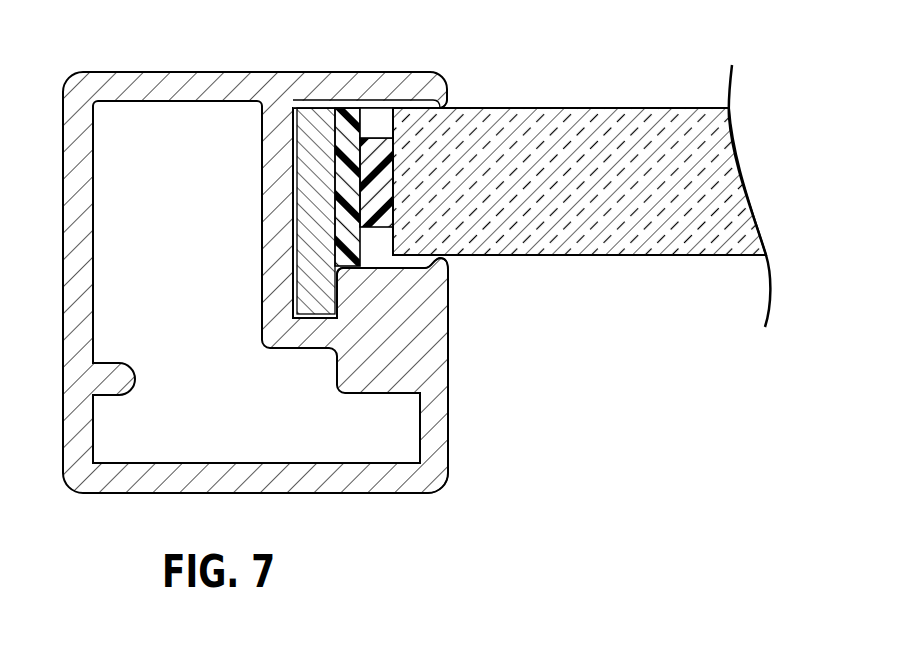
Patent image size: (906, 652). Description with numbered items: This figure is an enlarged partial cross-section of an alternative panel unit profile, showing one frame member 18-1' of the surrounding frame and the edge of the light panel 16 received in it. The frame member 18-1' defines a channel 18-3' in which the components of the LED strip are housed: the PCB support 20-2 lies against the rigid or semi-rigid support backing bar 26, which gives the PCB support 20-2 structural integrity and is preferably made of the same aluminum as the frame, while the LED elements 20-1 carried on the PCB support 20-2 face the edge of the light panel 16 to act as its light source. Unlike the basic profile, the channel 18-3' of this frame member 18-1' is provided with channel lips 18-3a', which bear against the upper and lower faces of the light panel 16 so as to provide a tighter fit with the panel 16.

The frame member 18-1' is at (255, 250).
The channel 18-3' is at (424, 369).
The channel lips 18-3a' is at (452, 177).
The LED elements 20-1 is at (377, 150).
The PCB support 20-2 is at (355, 110).
The support backing bar 26 is at (310, 180).
The light panel 16 is at (622, 172).